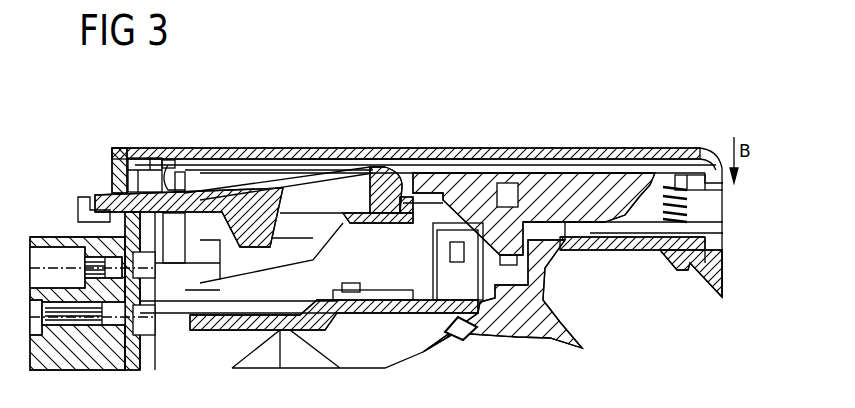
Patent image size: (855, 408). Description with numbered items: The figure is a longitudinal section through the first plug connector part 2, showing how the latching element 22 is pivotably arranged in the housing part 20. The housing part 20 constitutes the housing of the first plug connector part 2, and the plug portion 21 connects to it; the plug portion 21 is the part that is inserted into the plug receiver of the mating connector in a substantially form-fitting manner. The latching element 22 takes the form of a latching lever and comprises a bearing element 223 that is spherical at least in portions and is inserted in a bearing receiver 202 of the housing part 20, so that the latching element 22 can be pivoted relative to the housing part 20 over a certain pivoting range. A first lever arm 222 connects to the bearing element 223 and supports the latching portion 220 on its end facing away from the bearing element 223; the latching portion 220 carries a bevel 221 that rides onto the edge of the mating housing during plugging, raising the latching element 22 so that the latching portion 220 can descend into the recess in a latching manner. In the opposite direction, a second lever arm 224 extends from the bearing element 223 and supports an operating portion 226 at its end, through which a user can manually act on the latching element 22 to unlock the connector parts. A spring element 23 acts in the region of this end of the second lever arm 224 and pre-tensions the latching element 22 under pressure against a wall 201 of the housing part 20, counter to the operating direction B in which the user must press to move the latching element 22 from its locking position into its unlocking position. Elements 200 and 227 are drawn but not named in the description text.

The first plug connector part 2 is at (416, 137).
The housing part 20 is at (485, 163).
The plug portion 21 is at (50, 237).
The latching element 22 is at (198, 182).
The spring element 23 is at (676, 205).
The tapered rod 200 is at (241, 160).
The wall 201 is at (626, 250).
The bearing receiver 202 is at (393, 165).
The latching portion 220 is at (88, 215).
The bevel 221 is at (75, 220).
The first lever arm 222 is at (293, 172).
The bearing element 223 is at (383, 197).
The second lever arm 224 is at (457, 197).
The operating portion 226 is at (683, 183).
The spring 227 is at (672, 187).